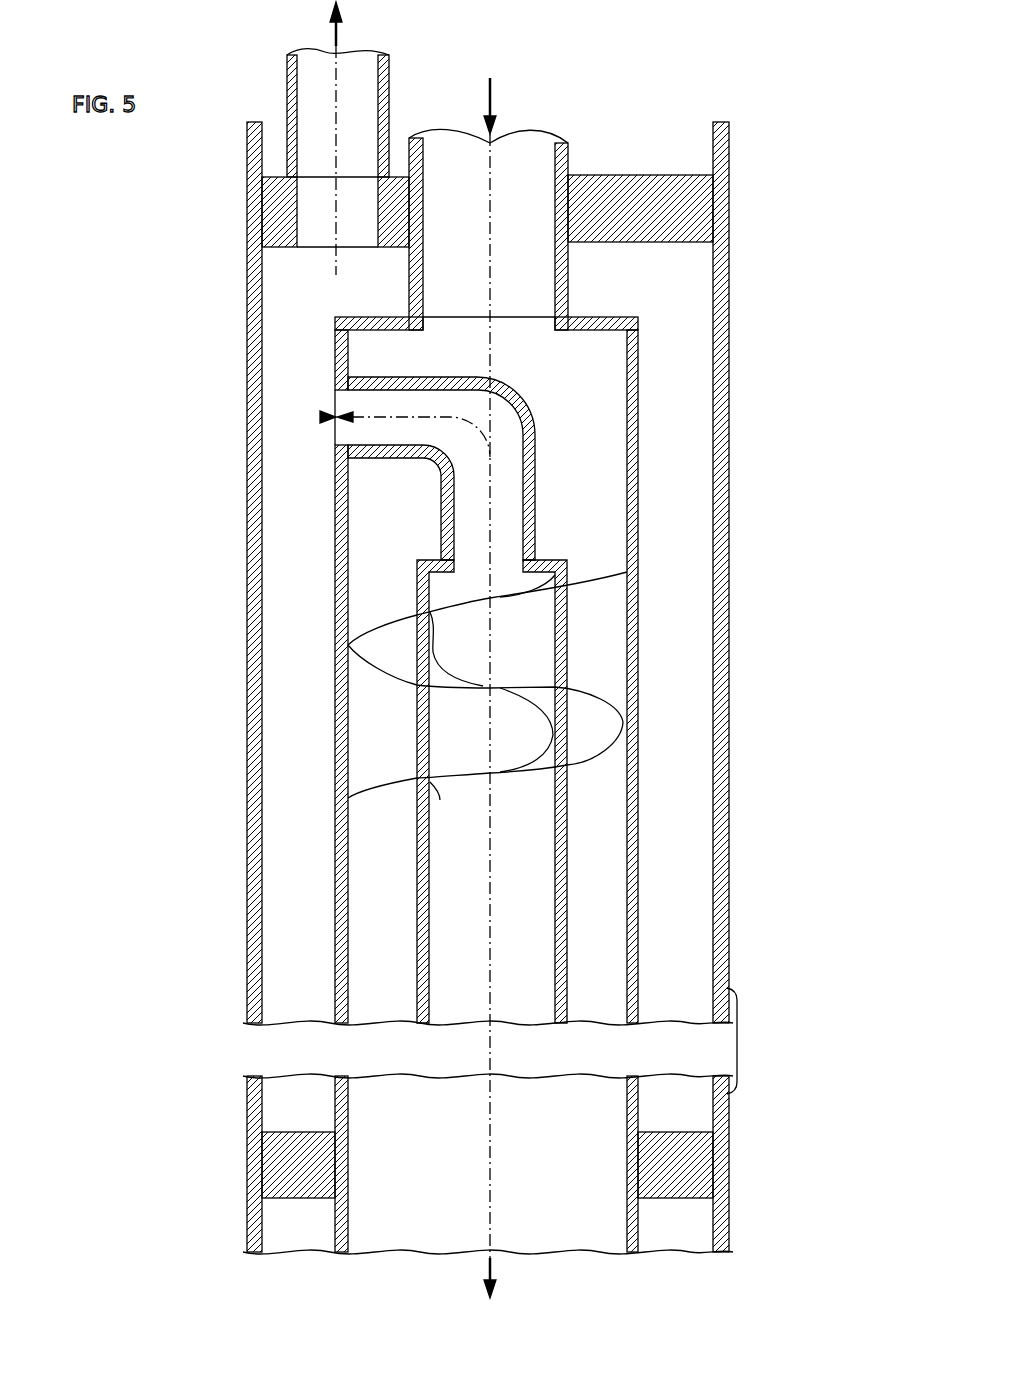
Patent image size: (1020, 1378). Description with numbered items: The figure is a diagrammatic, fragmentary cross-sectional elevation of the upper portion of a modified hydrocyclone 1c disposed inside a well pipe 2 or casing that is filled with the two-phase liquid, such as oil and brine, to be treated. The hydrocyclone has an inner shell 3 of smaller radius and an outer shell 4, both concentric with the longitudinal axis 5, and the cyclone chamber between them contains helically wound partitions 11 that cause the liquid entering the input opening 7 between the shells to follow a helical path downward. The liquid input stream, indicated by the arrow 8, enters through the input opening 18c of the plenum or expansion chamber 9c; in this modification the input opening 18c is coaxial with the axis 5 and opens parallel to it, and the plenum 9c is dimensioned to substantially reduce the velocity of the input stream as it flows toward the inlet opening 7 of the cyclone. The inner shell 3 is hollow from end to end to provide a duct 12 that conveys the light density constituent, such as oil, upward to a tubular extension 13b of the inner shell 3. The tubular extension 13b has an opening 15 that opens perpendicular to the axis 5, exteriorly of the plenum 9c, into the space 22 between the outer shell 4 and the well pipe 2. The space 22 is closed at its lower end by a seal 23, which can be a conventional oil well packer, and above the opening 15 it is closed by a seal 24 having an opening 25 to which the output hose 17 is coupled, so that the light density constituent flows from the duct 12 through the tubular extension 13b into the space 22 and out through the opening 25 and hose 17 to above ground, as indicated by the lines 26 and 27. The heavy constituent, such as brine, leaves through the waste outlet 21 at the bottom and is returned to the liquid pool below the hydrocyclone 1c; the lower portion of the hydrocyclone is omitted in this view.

The well pipe 2 is at (730, 474).
The hose 17 is at (390, 77).
The flow line 26 is at (337, 133).
The opening 25 is at (348, 233).
The seal 24 is at (617, 174).
The longitudinal axis 5 is at (491, 213).
The input stream 8 is at (493, 103).
The input opening 18c is at (471, 314).
The plenum 9c is at (603, 432).
The tubular extension 13b is at (497, 390).
The input opening 7 is at (380, 553).
The flow line 27 is at (397, 413).
The opening 15 is at (322, 417).
The inner shell 3 is at (568, 648).
The helically wound partitions 11 is at (603, 720).
The space 22 is at (278, 598).
The hydrocyclone 1c is at (650, 828).
The outer shell 4 is at (641, 898).
The duct 12 is at (518, 888).
The seal 23 is at (263, 1157).
The waste outlet 21 is at (492, 1282).